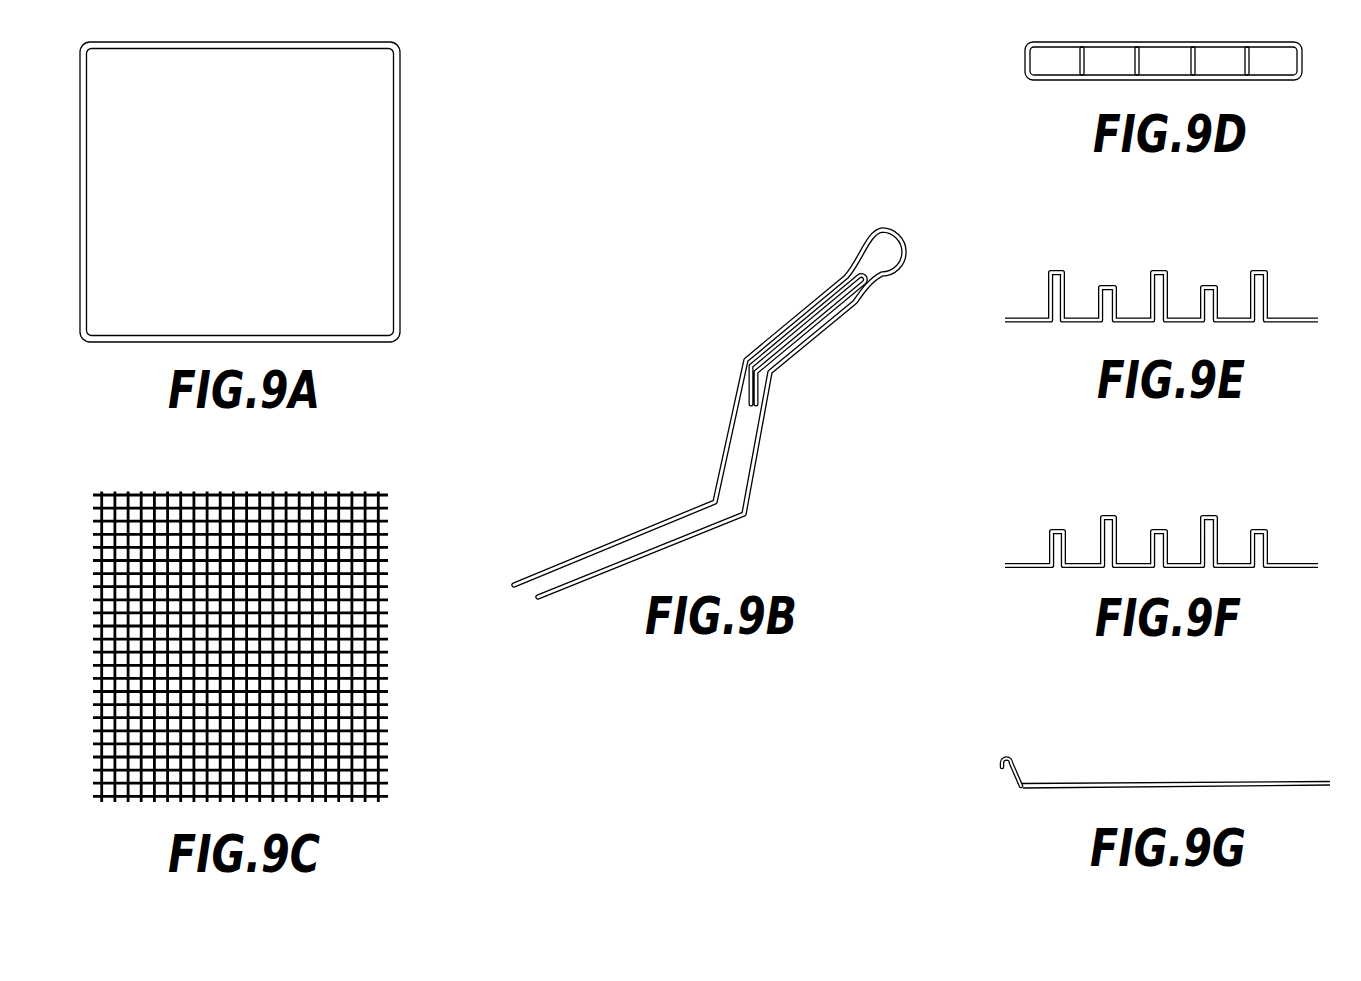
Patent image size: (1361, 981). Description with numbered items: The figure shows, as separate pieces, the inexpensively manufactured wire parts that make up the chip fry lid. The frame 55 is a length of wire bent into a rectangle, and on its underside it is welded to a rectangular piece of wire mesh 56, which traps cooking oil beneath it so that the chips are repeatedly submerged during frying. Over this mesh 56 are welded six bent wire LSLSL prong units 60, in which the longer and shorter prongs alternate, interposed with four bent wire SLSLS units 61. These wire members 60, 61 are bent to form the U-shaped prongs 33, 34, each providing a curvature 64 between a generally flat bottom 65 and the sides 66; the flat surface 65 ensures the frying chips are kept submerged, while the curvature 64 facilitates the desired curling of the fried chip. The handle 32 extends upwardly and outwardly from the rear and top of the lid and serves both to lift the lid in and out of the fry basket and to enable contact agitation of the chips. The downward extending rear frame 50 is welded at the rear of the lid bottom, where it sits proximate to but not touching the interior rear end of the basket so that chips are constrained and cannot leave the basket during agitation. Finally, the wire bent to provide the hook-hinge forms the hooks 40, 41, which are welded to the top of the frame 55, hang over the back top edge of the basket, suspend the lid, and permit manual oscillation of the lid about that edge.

In FIG. 9A, the frame 55 is at (397, 222).
In FIG. 9C, the wire mesh 56 is at (380, 752).
In FIG. 9B, the handle 32 is at (757, 455).
In FIG. 9D, the rear frame 50 is at (1052, 42).
In FIG. 9E, the LSLSL prong unit 60 is at (1270, 282).
In FIG. 9E, the curvature 64 is at (1046, 267).
In FIG. 9E, the flat bottom 65 is at (1062, 268).
In FIG. 9E, the sides 66 is at (1047, 296).
In FIG. 9E, the U-shaped prong 33 is at (1066, 297).
In FIG. 9E, the U-shaped prong 34 is at (1117, 300).
In FIG. 9F, the SLSLS prong unit 61 is at (1268, 545).
In FIG. 9G, the hook 40 is at (1147, 801).
In FIG. 9G, the hook 41 is at (1018, 786).